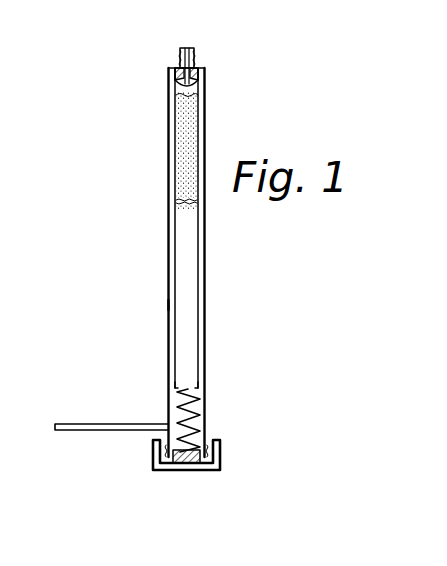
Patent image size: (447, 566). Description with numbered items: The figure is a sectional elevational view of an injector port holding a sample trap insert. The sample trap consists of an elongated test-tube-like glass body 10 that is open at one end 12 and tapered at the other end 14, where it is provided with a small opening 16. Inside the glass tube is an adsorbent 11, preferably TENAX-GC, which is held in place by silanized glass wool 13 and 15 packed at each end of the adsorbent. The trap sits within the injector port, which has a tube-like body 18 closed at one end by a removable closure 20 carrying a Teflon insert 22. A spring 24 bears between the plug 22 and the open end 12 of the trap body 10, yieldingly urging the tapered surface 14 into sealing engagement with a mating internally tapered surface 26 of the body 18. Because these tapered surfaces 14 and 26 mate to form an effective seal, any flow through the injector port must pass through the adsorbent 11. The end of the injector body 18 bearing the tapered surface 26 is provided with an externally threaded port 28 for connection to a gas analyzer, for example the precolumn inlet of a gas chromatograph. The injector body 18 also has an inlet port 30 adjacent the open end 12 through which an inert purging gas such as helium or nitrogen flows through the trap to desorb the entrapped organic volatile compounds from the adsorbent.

The sample trap body 10 is at (176, 246).
The adsorbent 11 is at (179, 148).
The open end 12 is at (187, 388).
The silanized glass wool 13 is at (179, 203).
The tapered end 14 is at (171, 75).
The silanized glass wool 15 is at (188, 96).
The small opening 16 is at (180, 82).
The injector port body 18 is at (169, 297).
The removable closure 20 is at (221, 454).
The Teflon insert 22 is at (181, 472).
The spring 24 is at (185, 403).
The internally tapered surface 26 is at (204, 72).
The externally threaded port 28 is at (194, 56).
The inlet port 30 is at (108, 423).